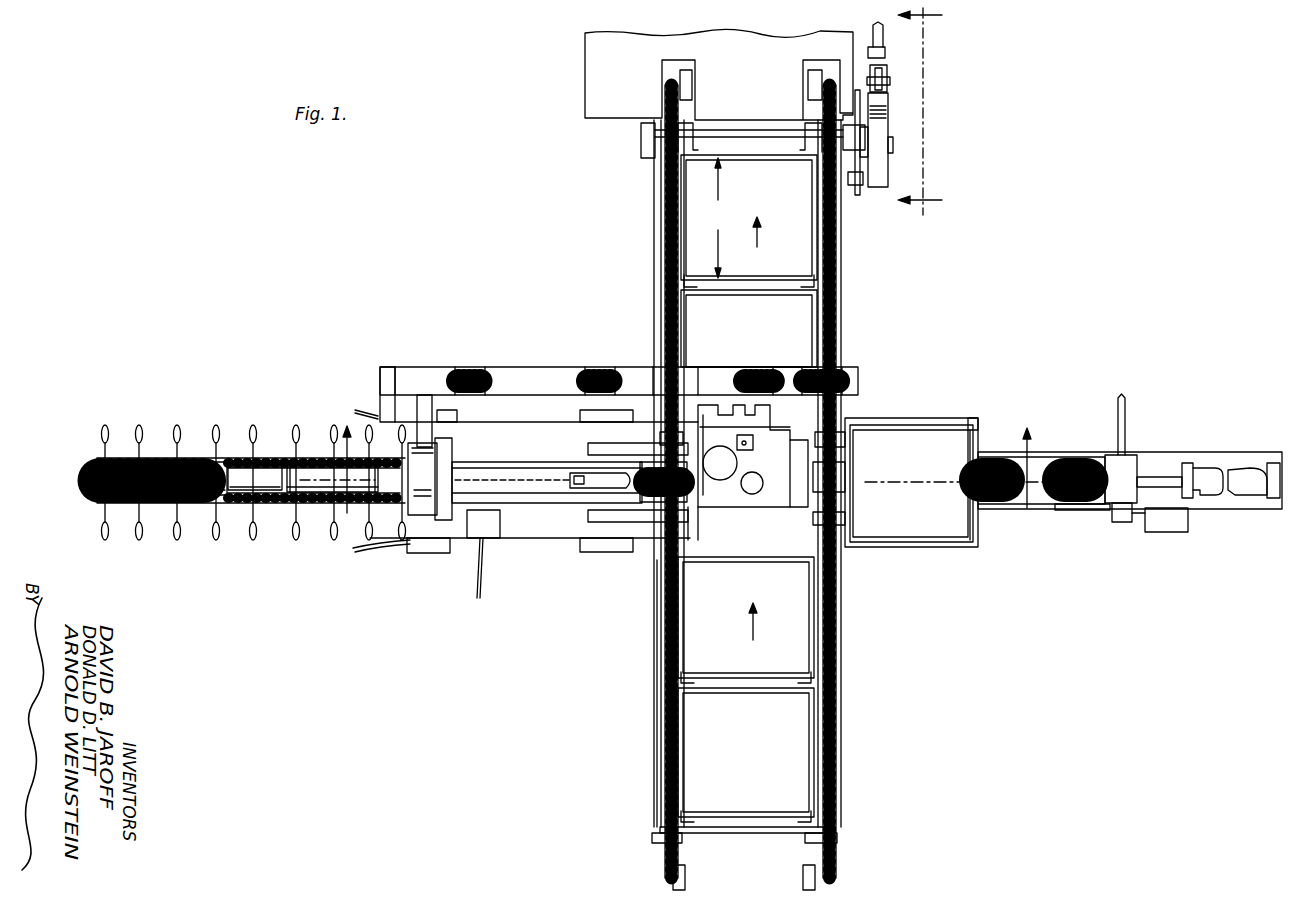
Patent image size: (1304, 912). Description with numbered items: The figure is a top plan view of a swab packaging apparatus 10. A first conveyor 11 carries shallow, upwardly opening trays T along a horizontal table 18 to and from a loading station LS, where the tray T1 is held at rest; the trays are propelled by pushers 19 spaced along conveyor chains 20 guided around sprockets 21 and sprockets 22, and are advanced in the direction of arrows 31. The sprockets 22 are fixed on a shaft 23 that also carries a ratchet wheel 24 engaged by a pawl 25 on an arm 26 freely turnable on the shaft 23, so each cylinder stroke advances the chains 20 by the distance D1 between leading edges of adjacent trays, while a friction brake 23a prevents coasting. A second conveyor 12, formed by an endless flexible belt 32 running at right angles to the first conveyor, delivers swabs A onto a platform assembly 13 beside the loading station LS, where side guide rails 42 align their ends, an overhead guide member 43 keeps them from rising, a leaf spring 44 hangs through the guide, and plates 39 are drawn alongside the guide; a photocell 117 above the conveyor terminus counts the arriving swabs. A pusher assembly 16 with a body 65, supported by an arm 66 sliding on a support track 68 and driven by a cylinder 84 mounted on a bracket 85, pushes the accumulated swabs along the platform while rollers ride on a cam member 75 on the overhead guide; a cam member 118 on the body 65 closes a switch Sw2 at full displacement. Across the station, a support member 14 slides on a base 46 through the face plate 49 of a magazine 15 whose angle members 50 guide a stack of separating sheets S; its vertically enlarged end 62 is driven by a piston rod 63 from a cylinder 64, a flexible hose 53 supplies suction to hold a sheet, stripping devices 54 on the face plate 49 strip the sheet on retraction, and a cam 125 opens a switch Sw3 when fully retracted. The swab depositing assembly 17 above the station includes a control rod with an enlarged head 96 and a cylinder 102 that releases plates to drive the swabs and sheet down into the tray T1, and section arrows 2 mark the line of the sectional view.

The swab packaging apparatus 10 is at (548, 655).
The first conveyor 11 is at (840, 683).
The second conveyor 12 is at (205, 502).
The platform assembly 13 is at (553, 510).
The support member 14 is at (1060, 510).
The magazine 15 is at (930, 412).
The pusher assembly 16 is at (427, 515).
The swab depositing assembly 17 is at (745, 515).
The table 18 is at (656, 722).
The pushers 19 is at (672, 285).
The conveyor chains 20 is at (660, 643).
The sprockets 21 is at (668, 860).
The sprockets 22 is at (640, 142).
The shaft 23 is at (773, 128).
The friction brake 23a is at (680, 150).
The ratchet wheel 24 is at (870, 125).
The pawl 25 is at (858, 190).
The arm 26 is at (860, 180).
The arrows 31 is at (758, 235).
The endless flexible belt 32 is at (207, 462).
The guide plates 39 is at (598, 447).
The side guide rails 42 is at (500, 410).
The overhead guide member 43 is at (830, 475).
The leaf spring 44 is at (572, 480).
The base 46 is at (1080, 512).
The face plate 49 is at (852, 455).
The angle members 50 is at (978, 430).
The flexible hose 53 is at (1126, 432).
The stripping devices 54 is at (830, 440).
The vertically enlarged end 62 is at (1128, 462).
The piston rod 63 is at (1160, 478).
The cylinder 64 is at (1240, 470).
The body 65 is at (412, 546).
The arm 66 is at (423, 400).
The support track 68 is at (545, 368).
The cam member 75 is at (500, 467).
The cylinder 84 is at (320, 482).
The bracket 85 is at (380, 380).
The enlarged head 96 is at (758, 487).
The cylinder 102 is at (727, 467).
The photocell 117 is at (483, 520).
The cam member 118 is at (440, 448).
The cam 125 is at (1122, 525).
The swabs A is at (158, 450).
The distance between leading edges of adjacent trays D1 is at (718, 218).
The loading station LS is at (803, 525).
The separating sheets S is at (958, 440).
The switch Sw2 is at (662, 440).
The switch Sw3 is at (1165, 535).
The trays T is at (800, 258).
The tray at loading station T1 is at (700, 555).
The section line 2- 2 is at (687, 459).